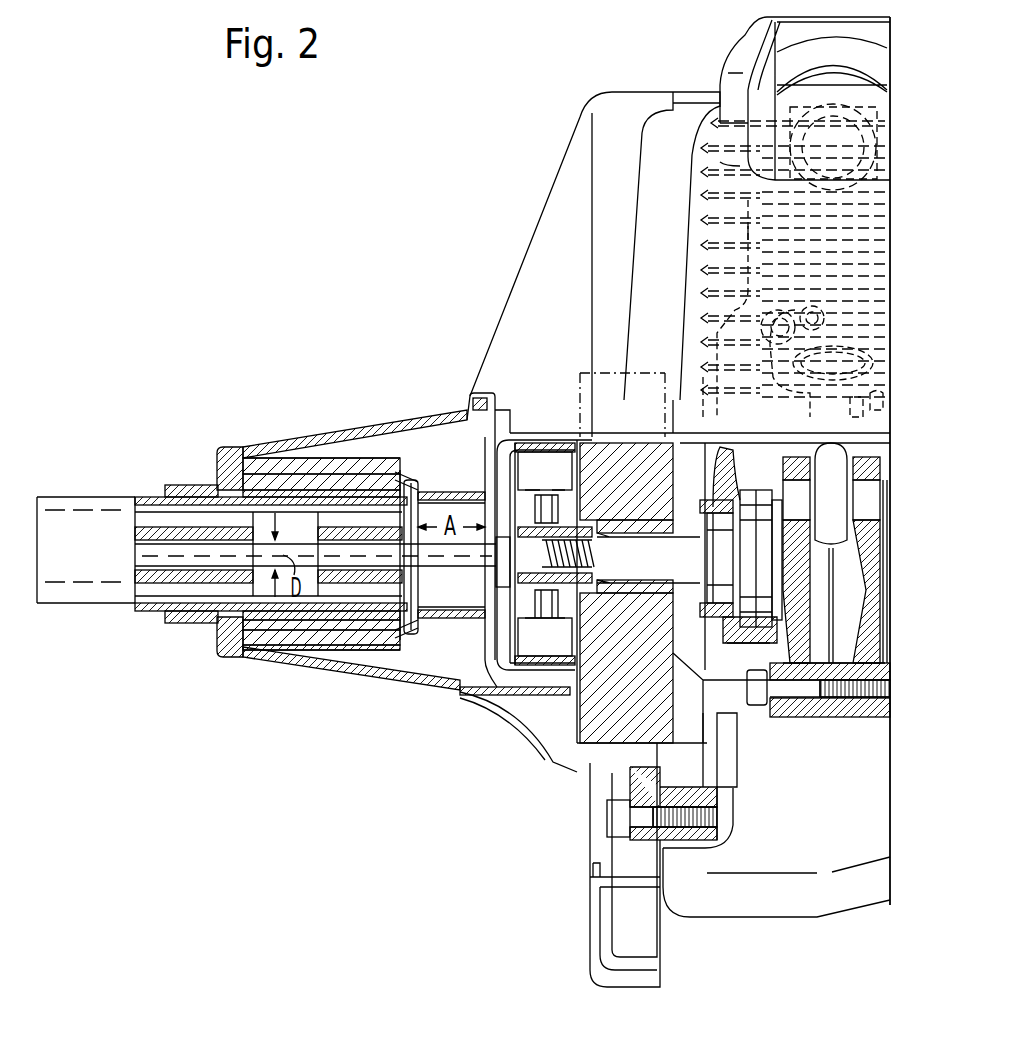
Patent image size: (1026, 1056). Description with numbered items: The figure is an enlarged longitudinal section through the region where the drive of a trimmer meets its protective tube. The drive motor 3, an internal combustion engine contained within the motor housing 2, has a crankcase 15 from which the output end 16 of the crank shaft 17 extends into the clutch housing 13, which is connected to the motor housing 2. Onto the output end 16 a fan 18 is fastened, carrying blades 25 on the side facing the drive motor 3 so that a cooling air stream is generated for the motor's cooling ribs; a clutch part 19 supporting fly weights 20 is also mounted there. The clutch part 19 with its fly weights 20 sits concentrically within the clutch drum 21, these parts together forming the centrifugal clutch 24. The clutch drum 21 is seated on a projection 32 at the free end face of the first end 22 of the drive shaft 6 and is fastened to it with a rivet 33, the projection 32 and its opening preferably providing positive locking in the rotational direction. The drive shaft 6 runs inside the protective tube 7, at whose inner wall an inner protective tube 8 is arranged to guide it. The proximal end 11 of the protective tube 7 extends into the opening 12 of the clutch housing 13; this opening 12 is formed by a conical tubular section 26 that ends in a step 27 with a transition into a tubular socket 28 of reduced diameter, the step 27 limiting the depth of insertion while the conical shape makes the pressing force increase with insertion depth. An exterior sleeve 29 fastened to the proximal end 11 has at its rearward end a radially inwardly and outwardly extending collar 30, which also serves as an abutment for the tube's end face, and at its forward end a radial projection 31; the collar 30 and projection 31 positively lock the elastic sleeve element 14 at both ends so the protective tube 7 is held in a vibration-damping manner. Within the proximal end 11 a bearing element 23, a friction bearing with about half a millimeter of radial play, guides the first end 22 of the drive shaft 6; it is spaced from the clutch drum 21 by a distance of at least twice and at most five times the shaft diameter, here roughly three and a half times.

The motor housing 2 is at (700, 148).
The drive motor 3 is at (748, 233).
The drive shaft 6 is at (167, 550).
The protective tube 7 is at (66, 606).
The protective tube 8 is at (152, 585).
The proximal end 11 is at (245, 652).
The opening 12 is at (212, 470).
The clutch housing 13 is at (551, 768).
The elastic sleeve element 14 is at (298, 470).
The crankcase 15 is at (822, 700).
The output end 16 is at (640, 540).
The crank shaft 17 is at (686, 555).
The fan 18 is at (617, 720).
The clutch part 19 is at (523, 510).
The fly weights 20 is at (550, 463).
The clutch drum 21 is at (460, 690).
The first end 22 is at (412, 666).
The bearing element 23 is at (343, 528).
The centrifugal clutch 24 is at (513, 686).
The blades 25 is at (690, 690).
The conical tubular section 26 is at (363, 507).
The step 27 is at (414, 472).
The tubular socket 28 is at (452, 494).
The exterior sleeve 29 is at (265, 462).
The collar 30 is at (400, 662).
The radial projection 31 is at (195, 625).
The projection 32 is at (447, 562).
The rivet 33 is at (495, 557).